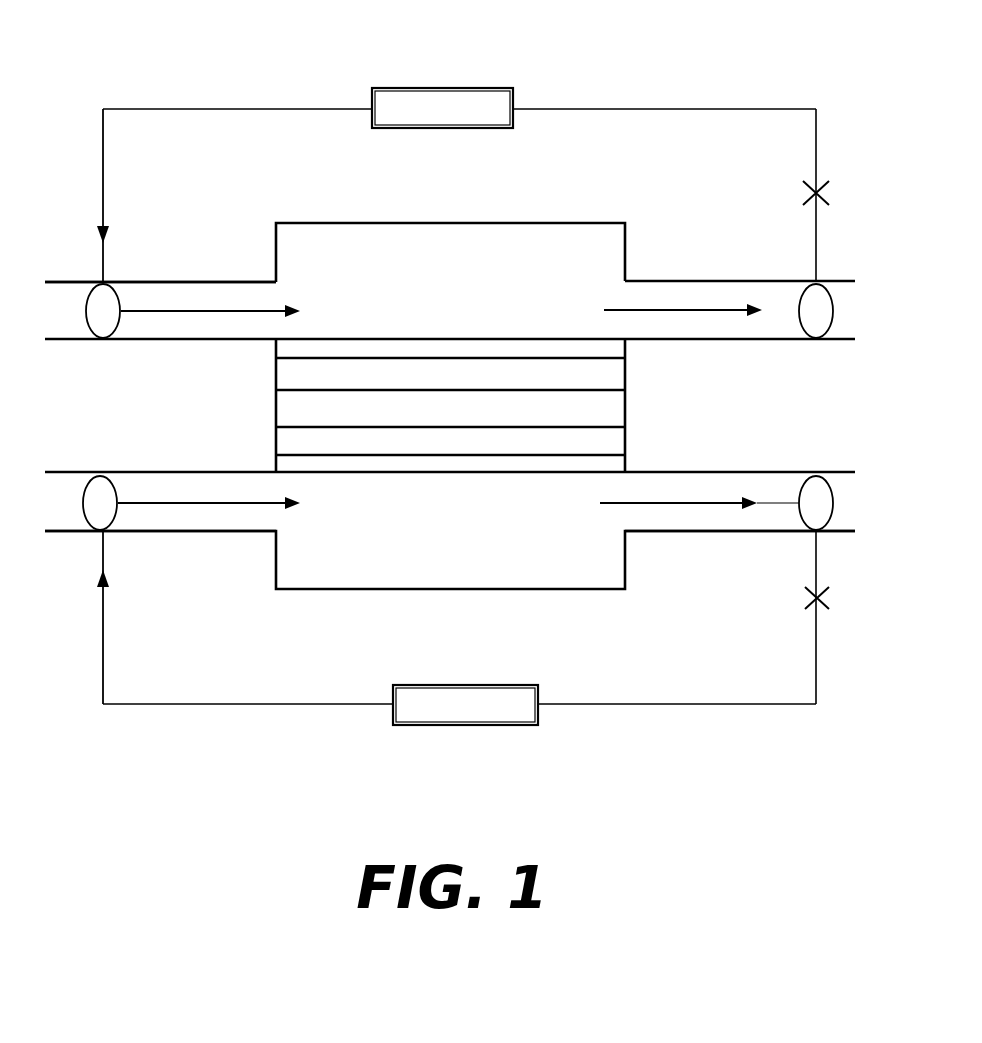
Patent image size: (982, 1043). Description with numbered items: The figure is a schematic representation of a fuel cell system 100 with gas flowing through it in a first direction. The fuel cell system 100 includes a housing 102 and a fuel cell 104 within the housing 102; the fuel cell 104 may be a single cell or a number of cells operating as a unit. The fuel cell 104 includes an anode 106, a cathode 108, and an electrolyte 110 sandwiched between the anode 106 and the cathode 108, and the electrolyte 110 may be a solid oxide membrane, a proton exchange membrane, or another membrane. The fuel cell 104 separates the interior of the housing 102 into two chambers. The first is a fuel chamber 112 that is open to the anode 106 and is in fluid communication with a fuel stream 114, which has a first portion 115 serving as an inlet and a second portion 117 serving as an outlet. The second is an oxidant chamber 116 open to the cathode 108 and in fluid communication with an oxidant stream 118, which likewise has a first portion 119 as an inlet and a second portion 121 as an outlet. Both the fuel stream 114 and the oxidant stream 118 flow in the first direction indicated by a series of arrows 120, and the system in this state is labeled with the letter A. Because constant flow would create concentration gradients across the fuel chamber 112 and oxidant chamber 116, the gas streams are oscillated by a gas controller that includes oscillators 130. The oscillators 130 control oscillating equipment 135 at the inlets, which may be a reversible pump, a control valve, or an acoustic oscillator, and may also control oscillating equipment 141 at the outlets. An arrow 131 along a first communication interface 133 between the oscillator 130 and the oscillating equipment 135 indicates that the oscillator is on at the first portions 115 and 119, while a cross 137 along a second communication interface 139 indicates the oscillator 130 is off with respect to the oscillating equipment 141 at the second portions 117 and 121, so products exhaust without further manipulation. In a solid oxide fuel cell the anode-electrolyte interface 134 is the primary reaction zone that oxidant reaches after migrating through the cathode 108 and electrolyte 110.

The fuel cell system 100 is at (283, 56).
The housing 102 is at (575, 223).
The fuel cell 104 is at (537, 316).
The anode 106 is at (276, 436).
The cathode 108 is at (276, 372).
The electrolyte 110 is at (625, 392).
The fuel chamber 112 is at (442, 557).
The fuel stream 114 is at (124, 512).
The first portion of fuel stream 115 is at (25, 520).
The oxidant chamber 116 is at (430, 300).
The second portion of fuel stream 117 is at (846, 520).
The oxidant stream 118 is at (133, 296).
The first portion of oxidant stream 119 is at (27, 330).
The arrows 120 is at (248, 311).
The second portion of oxidant stream 121 is at (846, 330).
The oscillator 130 is at (448, 88).
The arrow 131 is at (103, 184).
The first communication interface 133 is at (152, 108).
The anode-electrolyte interface 134 is at (625, 428).
The oscillating equipment 135 is at (103, 340).
The cross 137 is at (806, 194).
The second communication interface 139 is at (728, 108).
The oscillating equipment 141 is at (816, 339).